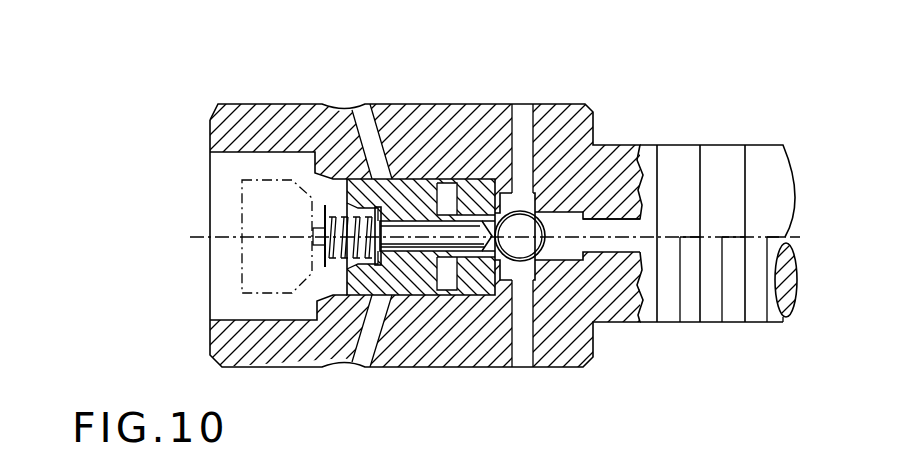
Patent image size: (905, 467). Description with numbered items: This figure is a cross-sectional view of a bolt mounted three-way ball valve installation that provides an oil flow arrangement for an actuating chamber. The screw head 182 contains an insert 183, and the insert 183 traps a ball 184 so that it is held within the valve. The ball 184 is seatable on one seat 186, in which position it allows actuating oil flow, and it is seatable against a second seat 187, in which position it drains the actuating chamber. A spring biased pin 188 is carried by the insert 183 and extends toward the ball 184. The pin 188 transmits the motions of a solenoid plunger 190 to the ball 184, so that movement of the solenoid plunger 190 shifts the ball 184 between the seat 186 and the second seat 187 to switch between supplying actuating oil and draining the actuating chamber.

The screw head 182 is at (300, 133).
The insert 183 is at (416, 282).
The ball 184 is at (552, 205).
The seat 186 is at (533, 188).
The second seat 187 is at (523, 282).
The spring biased pin 188 is at (410, 227).
The solenoid plunger 190 is at (243, 224).